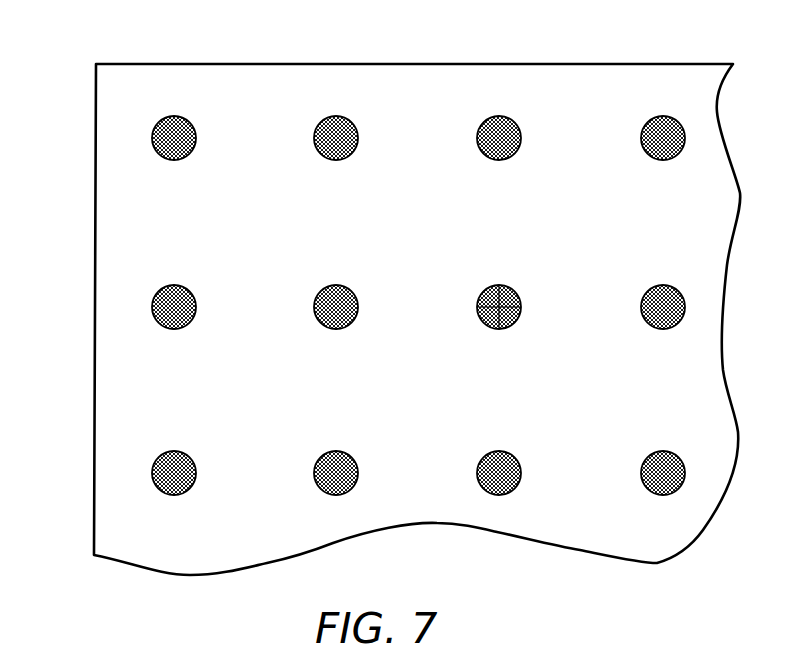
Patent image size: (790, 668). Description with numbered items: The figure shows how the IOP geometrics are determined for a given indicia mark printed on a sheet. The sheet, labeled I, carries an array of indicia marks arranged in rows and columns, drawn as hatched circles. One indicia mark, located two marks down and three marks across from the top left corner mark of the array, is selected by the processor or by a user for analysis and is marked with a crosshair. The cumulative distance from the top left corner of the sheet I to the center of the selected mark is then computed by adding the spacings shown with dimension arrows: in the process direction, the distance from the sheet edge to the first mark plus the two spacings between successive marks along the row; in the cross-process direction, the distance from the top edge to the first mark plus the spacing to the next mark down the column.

The image / pixel array sheet I is at (186, 63).